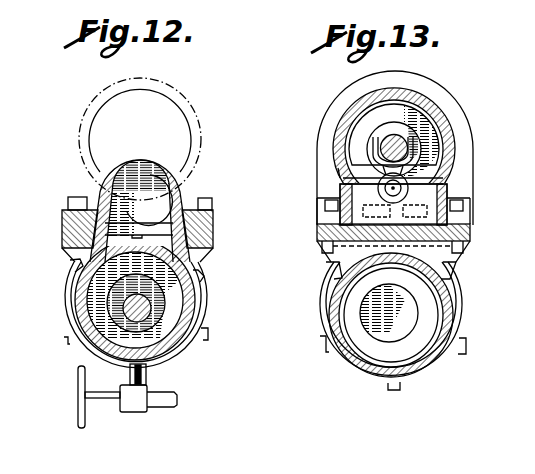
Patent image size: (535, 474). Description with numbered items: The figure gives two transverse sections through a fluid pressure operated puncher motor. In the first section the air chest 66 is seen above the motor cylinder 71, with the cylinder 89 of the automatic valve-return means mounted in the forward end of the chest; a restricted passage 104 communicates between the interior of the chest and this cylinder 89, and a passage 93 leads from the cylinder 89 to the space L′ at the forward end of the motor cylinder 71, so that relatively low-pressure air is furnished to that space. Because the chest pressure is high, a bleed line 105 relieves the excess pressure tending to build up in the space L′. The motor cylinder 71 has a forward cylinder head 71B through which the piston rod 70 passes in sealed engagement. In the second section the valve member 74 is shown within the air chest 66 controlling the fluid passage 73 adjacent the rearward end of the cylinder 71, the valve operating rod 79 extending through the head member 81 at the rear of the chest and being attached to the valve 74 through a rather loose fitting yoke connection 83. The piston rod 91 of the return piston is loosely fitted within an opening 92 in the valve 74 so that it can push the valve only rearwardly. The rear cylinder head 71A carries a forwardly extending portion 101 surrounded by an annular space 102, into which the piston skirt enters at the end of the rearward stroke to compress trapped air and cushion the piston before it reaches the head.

In FIG. 12, the air chest 66 is at (188, 101).
In FIG. 13, the air chest 66 is at (418, 98).
In FIG. 12, the restricted passage 104 is at (150, 146).
In FIG. 12, the cylinder 89 is at (181, 180).
In FIG. 12, the passage 93 is at (160, 229).
In FIG. 12, the piston rod 70 is at (107, 294).
In FIG. 12, the space L′ is at (167, 313).
In FIG. 12, the motor cylinder 71 is at (198, 328).
In FIG. 12, the forward cylinder head 71B is at (108, 333).
In FIG. 12, the bleed line 105 is at (136, 403).
In FIG. 13, the head member 81 is at (428, 118).
In FIG. 13, the yoke connection 83 is at (408, 136).
In FIG. 13, the valve operating rod 79 is at (414, 147).
In FIG. 13, the opening 92 is at (424, 174).
In FIG. 13, the valve member 74 is at (421, 209).
In FIG. 13, the fluid passage 73 is at (430, 261).
In FIG. 13, the piston rod 91 is at (337, 172).
In FIG. 13, the rear cylinder head 71A is at (428, 321).
In FIG. 13, the forwardly extending portion 101 is at (452, 341).
In FIG. 13, the annular space 102 is at (414, 370).